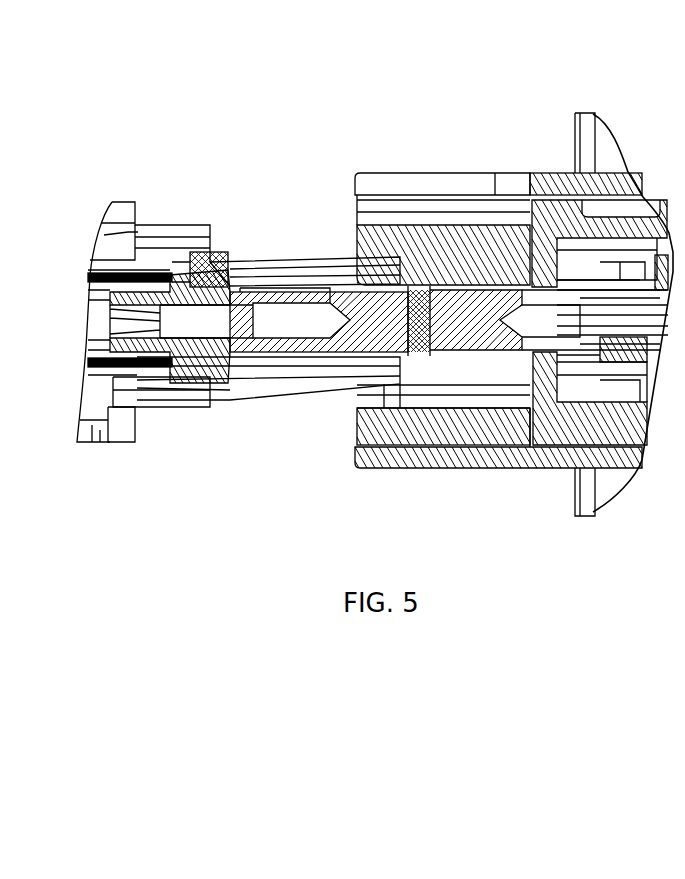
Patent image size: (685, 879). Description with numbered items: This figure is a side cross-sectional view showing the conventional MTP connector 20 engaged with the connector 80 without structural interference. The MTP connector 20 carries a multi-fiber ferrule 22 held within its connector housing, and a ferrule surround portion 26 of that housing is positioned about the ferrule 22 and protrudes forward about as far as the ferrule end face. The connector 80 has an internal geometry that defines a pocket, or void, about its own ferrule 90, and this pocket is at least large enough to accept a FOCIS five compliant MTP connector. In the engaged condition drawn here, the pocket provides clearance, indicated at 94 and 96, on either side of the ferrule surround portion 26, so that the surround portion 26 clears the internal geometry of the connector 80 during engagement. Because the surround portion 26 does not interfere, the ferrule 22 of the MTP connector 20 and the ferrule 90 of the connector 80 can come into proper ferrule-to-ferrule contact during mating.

The MTP connector 20 is at (216, 158).
The multi-fiber ferrule 22 is at (367, 327).
The ferrule surround portion 26 is at (275, 268).
The connector 80 is at (490, 82).
The ferrule 90 is at (460, 327).
The clearance 94 is at (432, 280).
The clearance 96 is at (405, 378).